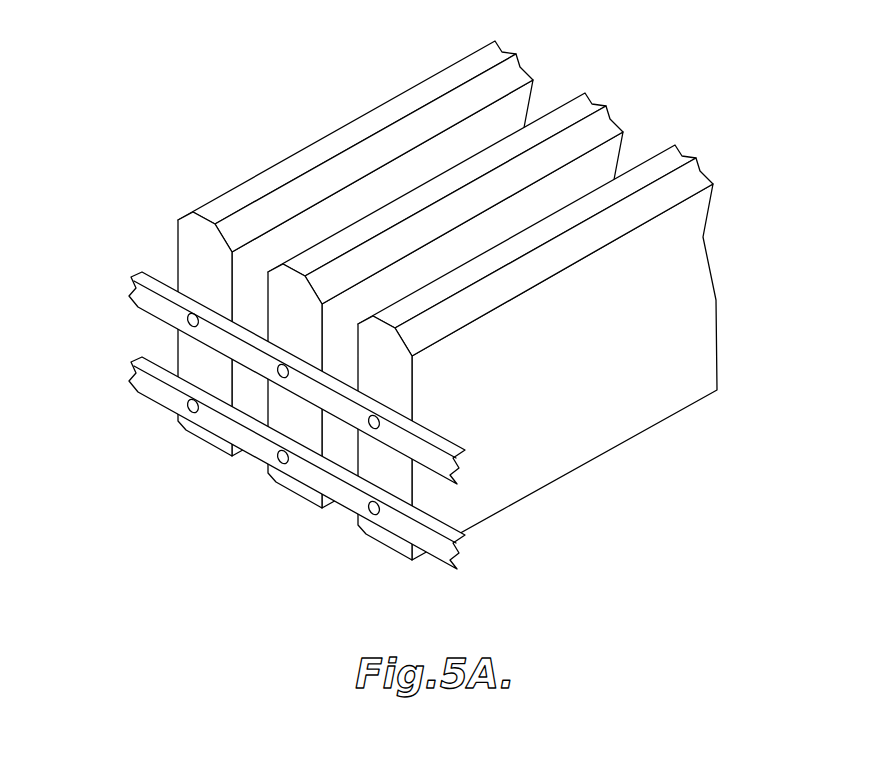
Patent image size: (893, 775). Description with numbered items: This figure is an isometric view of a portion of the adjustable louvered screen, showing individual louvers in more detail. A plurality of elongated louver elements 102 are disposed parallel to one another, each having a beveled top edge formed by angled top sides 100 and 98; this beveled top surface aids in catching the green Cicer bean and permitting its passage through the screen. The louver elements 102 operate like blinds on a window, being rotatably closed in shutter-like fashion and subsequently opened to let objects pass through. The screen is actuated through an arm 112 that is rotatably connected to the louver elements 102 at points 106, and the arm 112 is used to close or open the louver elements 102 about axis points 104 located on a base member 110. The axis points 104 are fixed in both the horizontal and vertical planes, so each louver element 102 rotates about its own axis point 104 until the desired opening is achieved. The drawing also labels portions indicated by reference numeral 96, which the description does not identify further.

The bar 96 is at (418, 300).
The angled top side 98 is at (223, 238).
The angled top side 100 is at (183, 218).
The louver element 102 is at (187, 240).
The axis point 104 is at (185, 418).
The connection point 106 is at (187, 321).
The base member 110 is at (297, 488).
The arm 112 is at (317, 405).